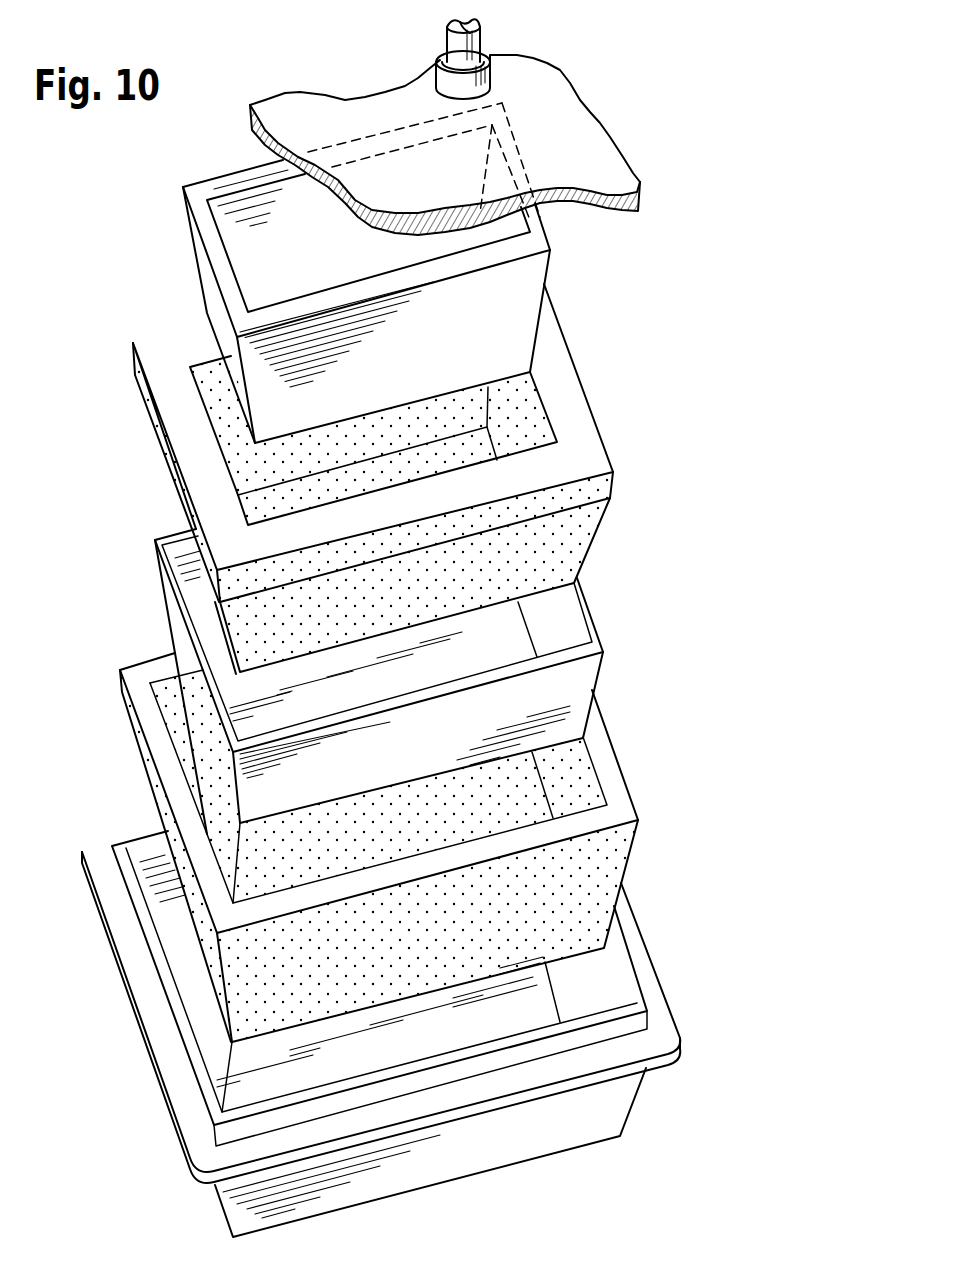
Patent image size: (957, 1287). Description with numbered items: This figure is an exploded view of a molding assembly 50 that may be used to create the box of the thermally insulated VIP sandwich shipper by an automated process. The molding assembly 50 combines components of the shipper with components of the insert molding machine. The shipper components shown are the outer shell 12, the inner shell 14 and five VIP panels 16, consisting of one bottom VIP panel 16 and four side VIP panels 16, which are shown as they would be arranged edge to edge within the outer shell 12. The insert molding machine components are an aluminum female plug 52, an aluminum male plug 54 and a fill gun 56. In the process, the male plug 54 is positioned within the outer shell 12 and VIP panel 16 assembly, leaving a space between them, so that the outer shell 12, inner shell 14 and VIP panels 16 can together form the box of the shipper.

The outer shell 12 is at (158, 798).
The inner shell 14 is at (202, 488).
The VIP panels 16 is at (583, 678).
The molding assembly 50 is at (756, 565).
The female plug 52 is at (654, 962).
The male plug 54 is at (545, 270).
The fill gun 56 is at (483, 42).